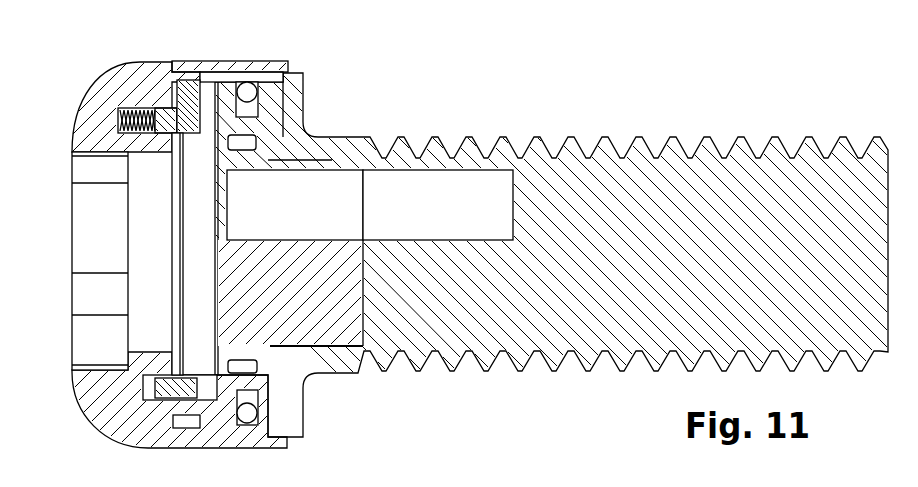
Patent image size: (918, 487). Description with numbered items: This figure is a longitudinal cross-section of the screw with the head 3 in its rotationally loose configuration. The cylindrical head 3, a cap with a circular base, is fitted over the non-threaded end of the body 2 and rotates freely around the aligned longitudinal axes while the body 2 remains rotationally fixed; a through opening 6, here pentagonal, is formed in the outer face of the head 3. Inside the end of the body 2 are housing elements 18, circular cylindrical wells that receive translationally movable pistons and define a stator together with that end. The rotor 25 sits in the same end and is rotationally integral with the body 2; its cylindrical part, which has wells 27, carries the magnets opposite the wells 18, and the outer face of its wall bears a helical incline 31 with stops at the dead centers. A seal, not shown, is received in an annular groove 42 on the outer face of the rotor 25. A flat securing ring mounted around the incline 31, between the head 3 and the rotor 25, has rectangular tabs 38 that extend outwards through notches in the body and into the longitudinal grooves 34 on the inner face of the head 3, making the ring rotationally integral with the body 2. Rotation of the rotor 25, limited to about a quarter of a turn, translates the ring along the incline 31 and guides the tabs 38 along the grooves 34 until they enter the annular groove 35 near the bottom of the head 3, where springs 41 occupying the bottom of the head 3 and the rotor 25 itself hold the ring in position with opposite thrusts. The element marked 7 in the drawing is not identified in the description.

The body 2 is at (577, 323).
The screw head 3 is at (122, 85).
The through opening 6 is at (66, 211).
The pin 7 is at (180, 250).
The housing elements 18 is at (440, 198).
The rotor 25 is at (336, 308).
The wells 27 is at (325, 198).
The helical incline 31 is at (245, 140).
The longitudinal grooves 34 is at (222, 83).
The annular groove 35 is at (173, 88).
The tabs 38 is at (190, 100).
The springs 41 is at (117, 125).
The annular groove 42 is at (247, 418).